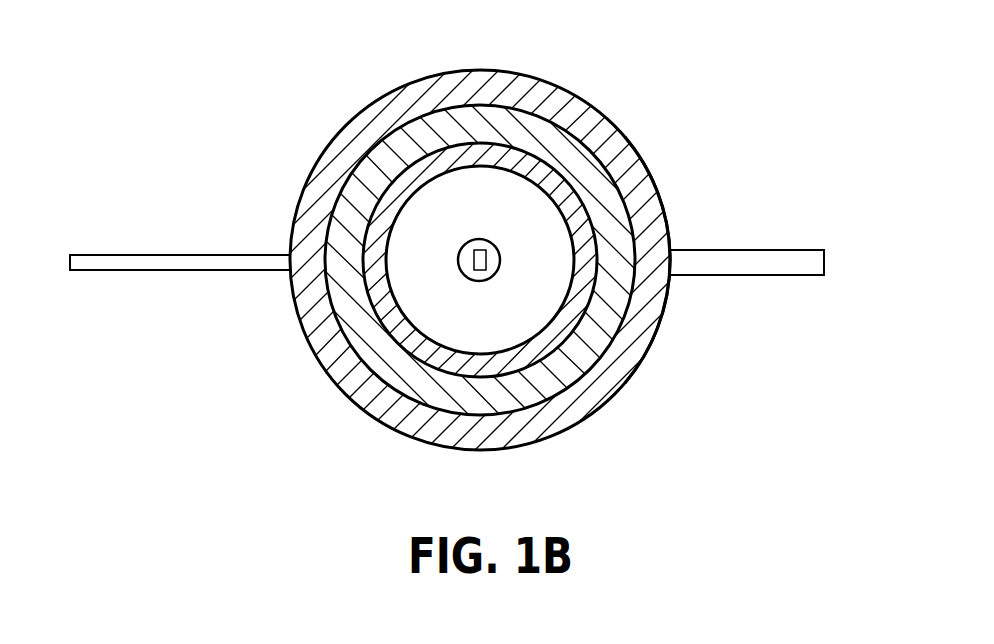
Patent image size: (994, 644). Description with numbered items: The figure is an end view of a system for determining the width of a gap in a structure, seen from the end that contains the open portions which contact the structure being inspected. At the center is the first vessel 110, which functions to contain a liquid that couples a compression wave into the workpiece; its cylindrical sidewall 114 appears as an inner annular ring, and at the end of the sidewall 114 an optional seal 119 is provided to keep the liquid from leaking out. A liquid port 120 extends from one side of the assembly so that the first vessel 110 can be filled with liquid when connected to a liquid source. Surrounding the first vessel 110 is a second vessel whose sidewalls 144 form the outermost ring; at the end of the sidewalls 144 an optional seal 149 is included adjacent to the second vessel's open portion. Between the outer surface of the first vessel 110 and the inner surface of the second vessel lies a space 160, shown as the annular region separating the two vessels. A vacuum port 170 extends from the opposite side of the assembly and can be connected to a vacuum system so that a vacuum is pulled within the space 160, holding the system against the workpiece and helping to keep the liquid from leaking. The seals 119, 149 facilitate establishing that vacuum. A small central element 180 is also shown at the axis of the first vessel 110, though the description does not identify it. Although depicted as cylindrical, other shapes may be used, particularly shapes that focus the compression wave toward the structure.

The first vessel 110 is at (515, 217).
The sidewall 114 is at (395, 127).
The seal 119 is at (377, 233).
The liquid port 120 is at (783, 250).
The sidewalls 144 is at (533, 77).
The seal 149 is at (665, 208).
The space 160 is at (375, 362).
The vacuum port 170 is at (173, 254).
The central conductor 180 is at (491, 277).